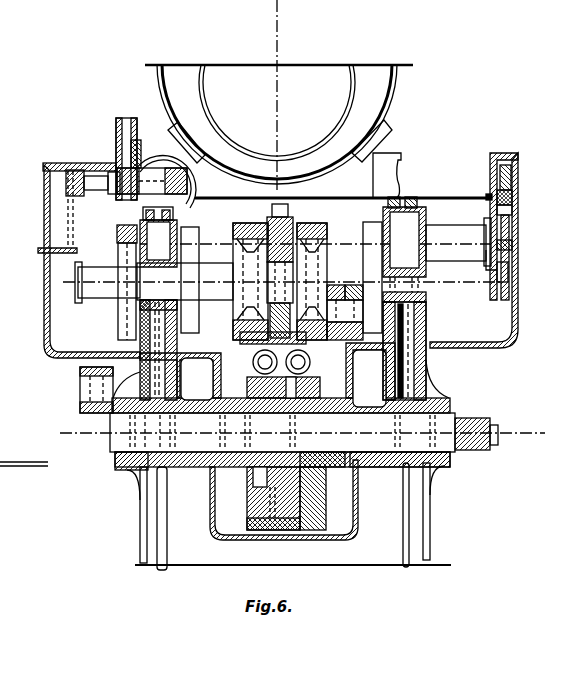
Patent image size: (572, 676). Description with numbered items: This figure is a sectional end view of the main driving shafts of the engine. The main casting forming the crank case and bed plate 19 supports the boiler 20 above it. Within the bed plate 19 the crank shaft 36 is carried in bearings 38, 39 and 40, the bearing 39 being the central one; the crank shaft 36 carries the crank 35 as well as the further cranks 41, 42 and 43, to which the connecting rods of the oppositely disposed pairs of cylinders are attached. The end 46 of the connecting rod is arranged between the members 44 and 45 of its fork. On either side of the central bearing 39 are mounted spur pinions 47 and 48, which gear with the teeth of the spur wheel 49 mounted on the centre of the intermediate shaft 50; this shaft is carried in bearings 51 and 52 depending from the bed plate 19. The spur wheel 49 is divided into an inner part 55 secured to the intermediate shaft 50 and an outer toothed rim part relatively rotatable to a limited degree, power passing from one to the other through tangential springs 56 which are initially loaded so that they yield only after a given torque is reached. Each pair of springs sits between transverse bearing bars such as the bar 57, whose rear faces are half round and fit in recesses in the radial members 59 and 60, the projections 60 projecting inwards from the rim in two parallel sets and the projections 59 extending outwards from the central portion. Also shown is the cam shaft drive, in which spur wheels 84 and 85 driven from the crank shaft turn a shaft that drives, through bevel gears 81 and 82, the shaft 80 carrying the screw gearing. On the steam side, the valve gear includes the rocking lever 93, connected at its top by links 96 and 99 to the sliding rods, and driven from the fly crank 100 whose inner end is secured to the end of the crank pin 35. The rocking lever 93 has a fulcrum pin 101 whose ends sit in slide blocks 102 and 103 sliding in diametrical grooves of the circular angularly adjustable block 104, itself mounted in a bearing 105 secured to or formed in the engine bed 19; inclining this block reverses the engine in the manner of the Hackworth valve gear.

The boiler 20 is at (396, 94).
The spur wheel 84 is at (127, 118).
The bevel gear 82 is at (140, 143).
The bevel gear 81 is at (168, 128).
The shaft 80 is at (181, 143).
The spur wheel 85 is at (120, 230).
The bed plate 19 is at (518, 283).
The link 96 is at (490, 174).
The link 99 is at (511, 178).
The bearing 105 is at (512, 196).
The fulcrum pin 101 is at (512, 211).
The slide block 102 is at (512, 222).
The angularly adjustable block 104 is at (512, 232).
The slide block 103 is at (488, 196).
The rocking lever 93 is at (508, 271).
The fly crank 100 is at (492, 262).
The crank 35 is at (456, 232).
The crank 43 is at (97, 295).
The bearing 40 is at (181, 260).
The crank 42 is at (212, 292).
The crank shaft 36 is at (137, 265).
The bearing 38 is at (420, 300).
The spur pinion 48 is at (246, 232).
The spur pinion 47 is at (312, 228).
The central bearing 39 is at (303, 260).
The end of connecting rod 46 is at (338, 284).
The fork member 45 is at (333, 285).
The fork member 44 is at (355, 285).
The crank 41 is at (345, 340).
The spur wheel 49 is at (240, 338).
The transverse bearing bar 57 is at (253, 366).
The tangential spring 56 is at (247, 385).
The intermediate shaft 50 is at (434, 416).
The bearing 52 is at (180, 468).
The bearing 51 is at (93, 406).
The inner part 55 is at (324, 464).
The radial member 59 is at (247, 503).
The radial member 60 is at (256, 513).